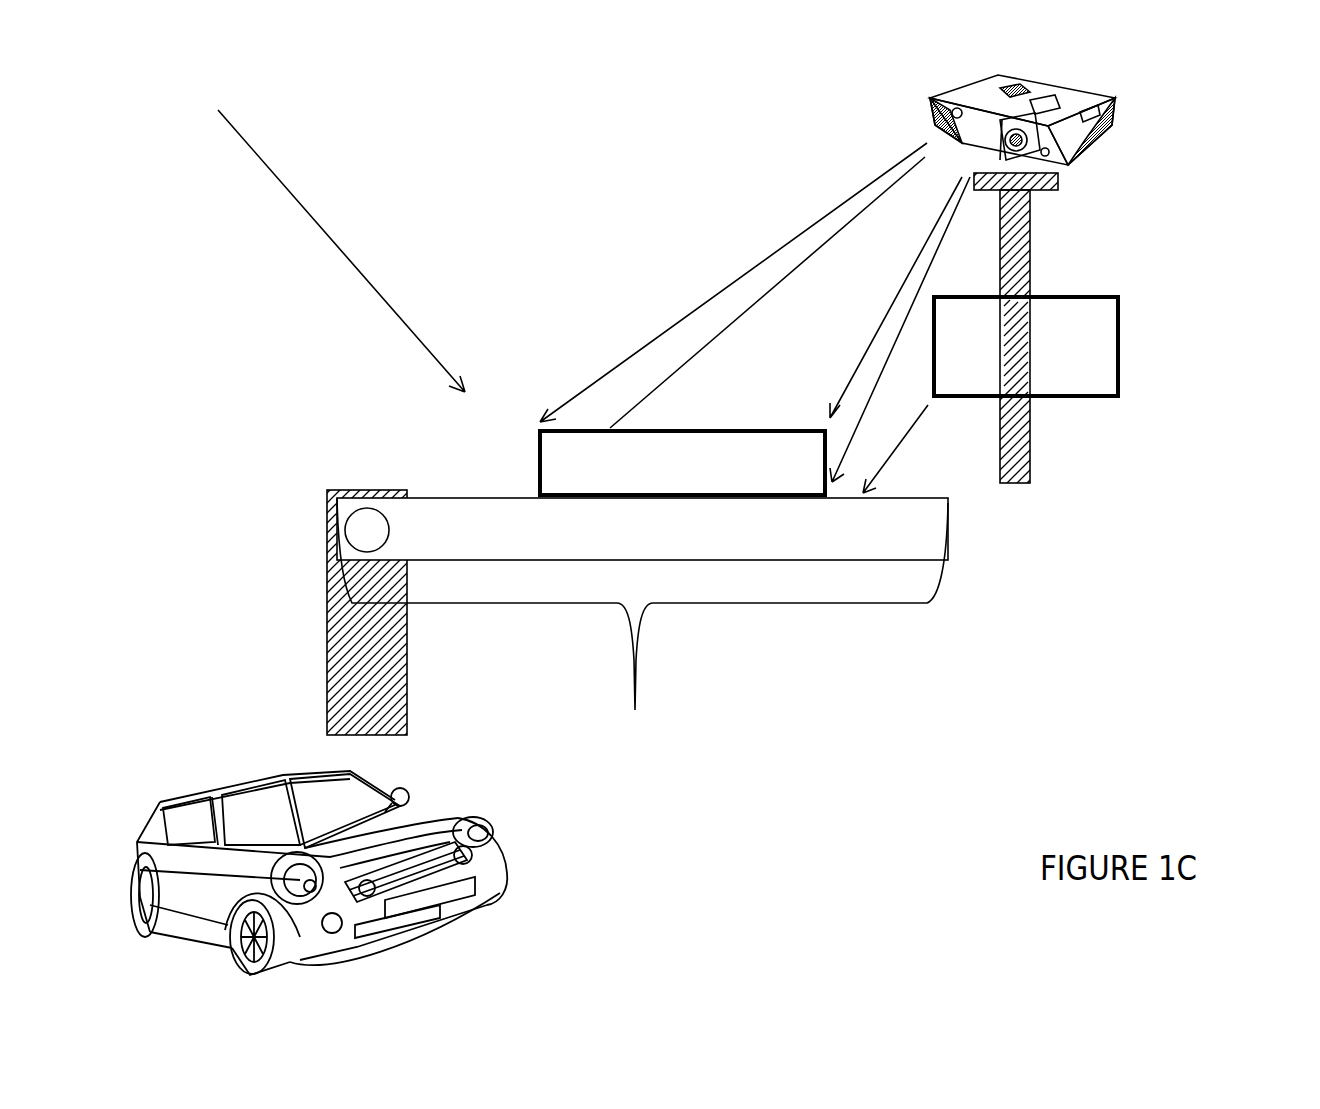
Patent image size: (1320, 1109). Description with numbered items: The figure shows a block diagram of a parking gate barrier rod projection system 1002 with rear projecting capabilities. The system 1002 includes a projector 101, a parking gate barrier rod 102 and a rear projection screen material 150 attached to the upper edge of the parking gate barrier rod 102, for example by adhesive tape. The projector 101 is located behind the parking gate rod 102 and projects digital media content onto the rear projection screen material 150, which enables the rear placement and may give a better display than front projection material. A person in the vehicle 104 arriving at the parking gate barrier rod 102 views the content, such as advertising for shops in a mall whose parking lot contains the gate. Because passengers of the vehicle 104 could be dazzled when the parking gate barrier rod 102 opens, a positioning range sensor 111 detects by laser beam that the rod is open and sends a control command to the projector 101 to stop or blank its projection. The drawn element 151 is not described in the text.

The projector 101 is at (1117, 133).
The positioning range sensor 111 is at (1137, 368).
The rear projection screen material 150 is at (740, 430).
The parking gate barrier rod 102 is at (803, 555).
The gate arm projection surface 151 is at (642, 627).
The vehicle 104 is at (515, 848).
The system 1002 is at (341, 251).